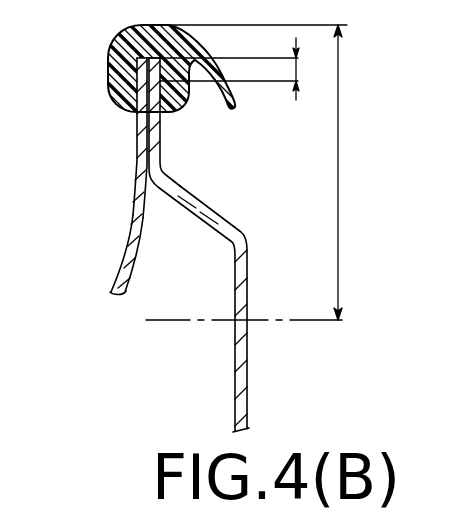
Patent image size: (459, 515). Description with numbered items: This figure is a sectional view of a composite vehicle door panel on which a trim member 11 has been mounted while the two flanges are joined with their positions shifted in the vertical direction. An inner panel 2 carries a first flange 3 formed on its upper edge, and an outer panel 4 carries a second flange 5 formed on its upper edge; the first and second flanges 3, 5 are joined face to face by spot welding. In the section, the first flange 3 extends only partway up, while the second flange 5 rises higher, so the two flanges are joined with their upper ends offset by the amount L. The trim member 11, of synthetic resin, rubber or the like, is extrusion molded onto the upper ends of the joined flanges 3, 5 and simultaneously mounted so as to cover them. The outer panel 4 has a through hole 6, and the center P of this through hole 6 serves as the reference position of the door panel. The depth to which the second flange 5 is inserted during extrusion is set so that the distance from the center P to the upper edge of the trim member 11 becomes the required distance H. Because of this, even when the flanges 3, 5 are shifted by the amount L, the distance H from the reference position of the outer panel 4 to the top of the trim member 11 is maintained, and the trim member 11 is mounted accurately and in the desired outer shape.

The trim member 11 is at (108, 62).
The first flange 3 is at (132, 114).
The inner panel 2 is at (122, 244).
The second flange 5 is at (154, 144).
The outer panel 4 is at (248, 263).
The through hole 6 is at (237, 341).
The center of through hole P is at (273, 321).
The amount of vertical shift L is at (297, 68).
The required distance H is at (338, 185).